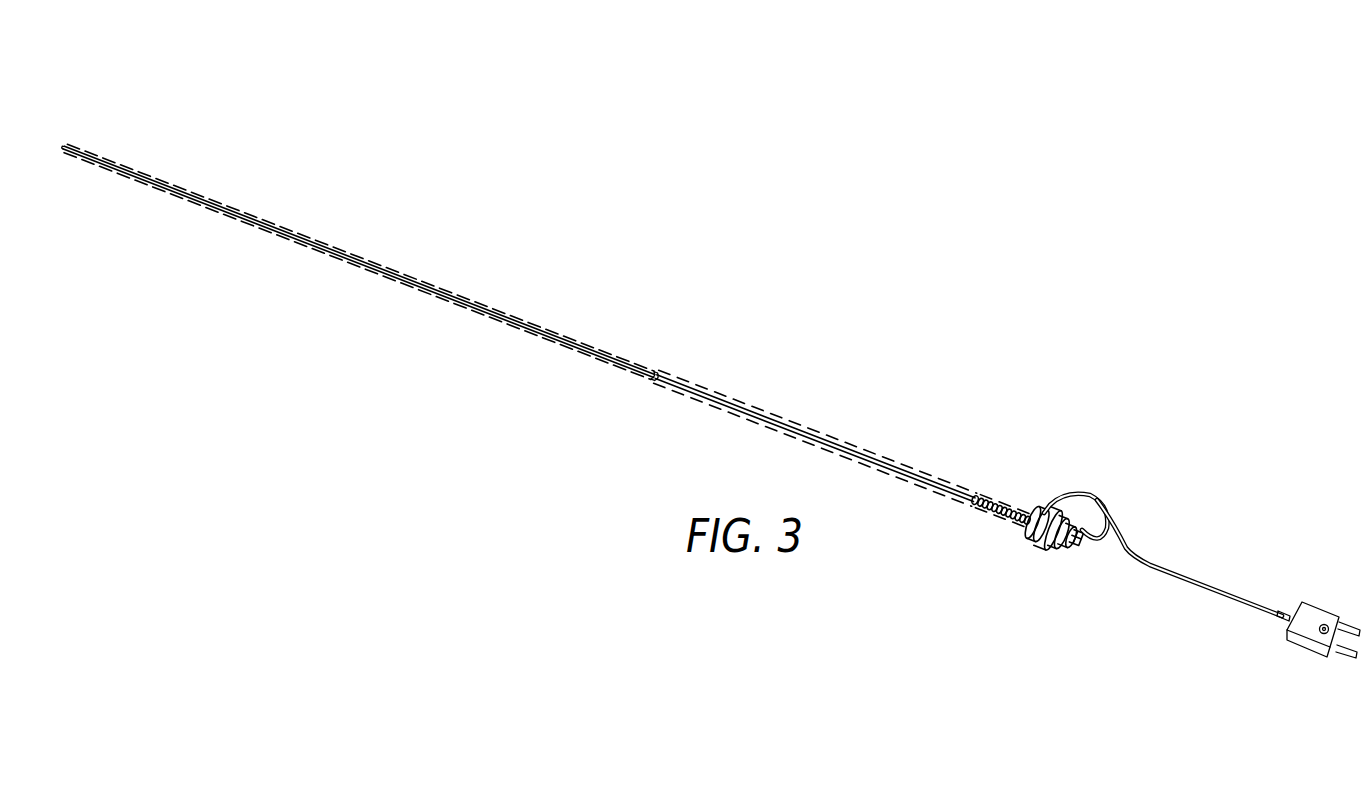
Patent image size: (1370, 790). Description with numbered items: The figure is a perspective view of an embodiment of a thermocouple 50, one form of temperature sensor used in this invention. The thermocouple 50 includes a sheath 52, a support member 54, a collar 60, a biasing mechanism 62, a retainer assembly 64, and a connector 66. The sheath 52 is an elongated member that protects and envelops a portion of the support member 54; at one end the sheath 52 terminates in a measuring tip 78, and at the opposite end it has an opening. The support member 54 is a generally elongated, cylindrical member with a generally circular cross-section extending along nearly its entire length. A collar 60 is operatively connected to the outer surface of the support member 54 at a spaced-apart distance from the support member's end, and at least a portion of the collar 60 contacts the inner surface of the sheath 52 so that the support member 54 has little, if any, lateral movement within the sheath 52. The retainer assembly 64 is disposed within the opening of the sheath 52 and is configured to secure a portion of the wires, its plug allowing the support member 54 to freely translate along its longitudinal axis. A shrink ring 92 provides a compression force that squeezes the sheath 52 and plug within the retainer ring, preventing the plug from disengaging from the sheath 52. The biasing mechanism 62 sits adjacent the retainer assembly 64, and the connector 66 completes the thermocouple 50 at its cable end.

The thermocouple 50 is at (760, 374).
The sheath 52 is at (218, 198).
The support member 54 is at (323, 250).
The measuring tip 78 is at (60, 146).
The collar 60 is at (973, 496).
The biasing mechanism 62 is at (1000, 505).
The retainer assembly 64 is at (1024, 549).
The shrink ring 92 is at (1041, 552).
The connector 66 is at (1312, 601).